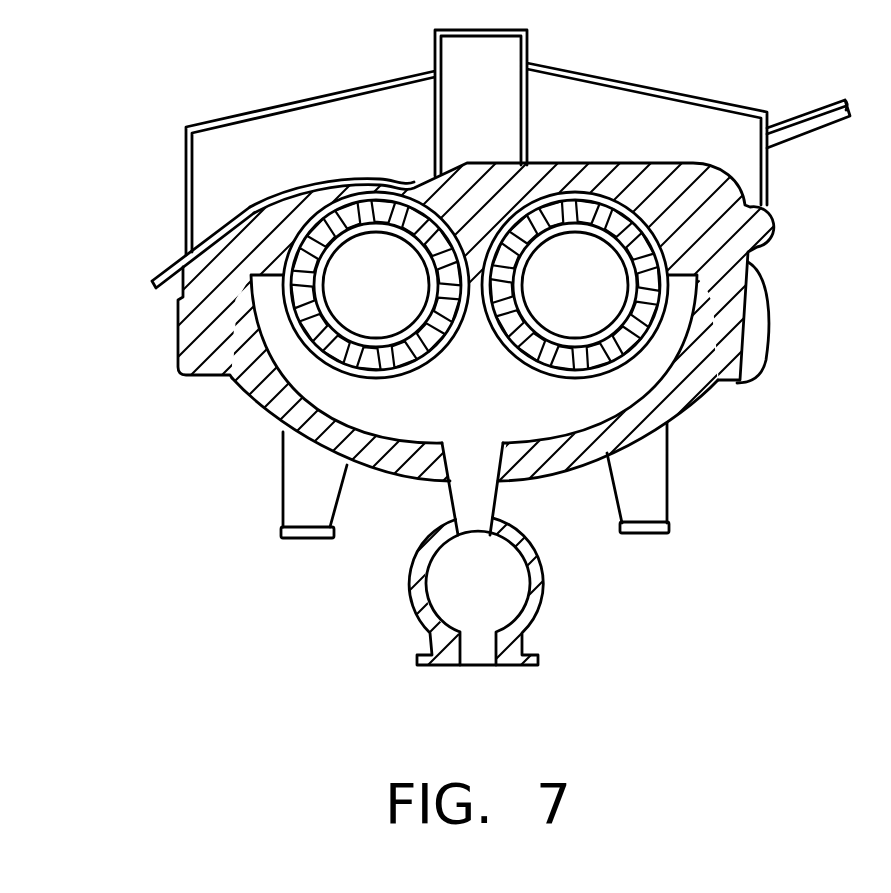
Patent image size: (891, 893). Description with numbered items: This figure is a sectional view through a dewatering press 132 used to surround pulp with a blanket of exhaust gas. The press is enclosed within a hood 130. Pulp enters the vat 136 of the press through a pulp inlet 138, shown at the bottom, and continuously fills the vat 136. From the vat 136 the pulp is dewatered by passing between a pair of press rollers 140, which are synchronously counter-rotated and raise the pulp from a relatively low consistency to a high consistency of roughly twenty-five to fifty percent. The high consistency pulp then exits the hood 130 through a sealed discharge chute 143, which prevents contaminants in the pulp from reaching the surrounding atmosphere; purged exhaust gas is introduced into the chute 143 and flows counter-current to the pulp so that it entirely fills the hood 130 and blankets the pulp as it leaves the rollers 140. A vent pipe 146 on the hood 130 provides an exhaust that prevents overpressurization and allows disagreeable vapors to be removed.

The hood 130 is at (560, 66).
The dewatering press 132 is at (408, 185).
The vat 136 is at (490, 418).
The pulp inlet 138 is at (505, 592).
The press rollers 140 is at (400, 301).
The discharge chute 143 is at (152, 282).
The vent pipe 146 is at (815, 118).